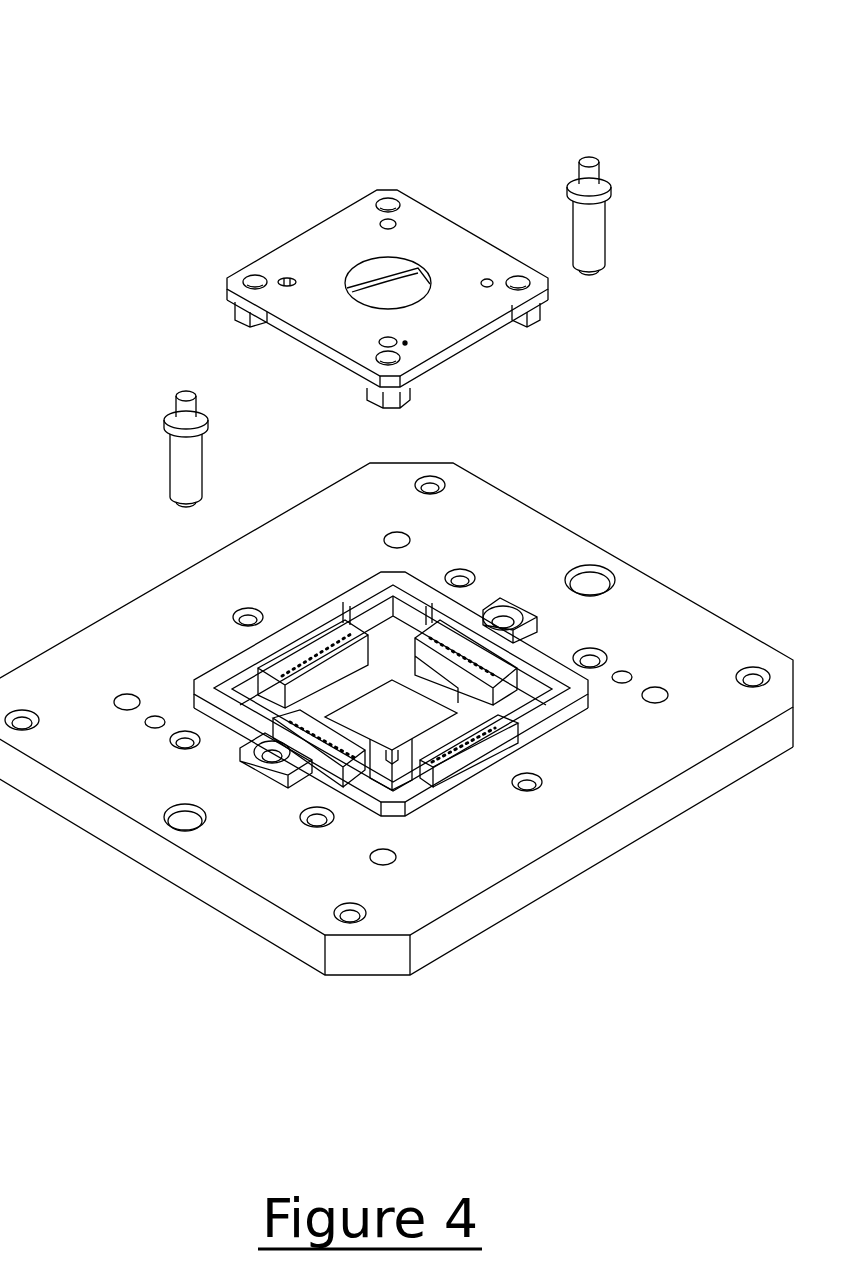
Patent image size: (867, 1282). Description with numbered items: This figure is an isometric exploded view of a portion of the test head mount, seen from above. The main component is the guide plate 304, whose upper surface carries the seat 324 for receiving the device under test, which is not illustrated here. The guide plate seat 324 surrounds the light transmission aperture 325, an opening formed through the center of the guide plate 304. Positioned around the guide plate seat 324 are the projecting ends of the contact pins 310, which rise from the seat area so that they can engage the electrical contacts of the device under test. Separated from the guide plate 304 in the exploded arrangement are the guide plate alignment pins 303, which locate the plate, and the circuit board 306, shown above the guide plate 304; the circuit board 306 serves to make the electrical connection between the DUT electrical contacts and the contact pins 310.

The guide plate alignment pin 303 is at (602, 167).
The guide plate 304 is at (396, 712).
The circuit board 306 is at (402, 193).
The contact pin 310 is at (457, 660).
The seat 324 is at (343, 707).
The light transmission aperture 325 is at (412, 730).